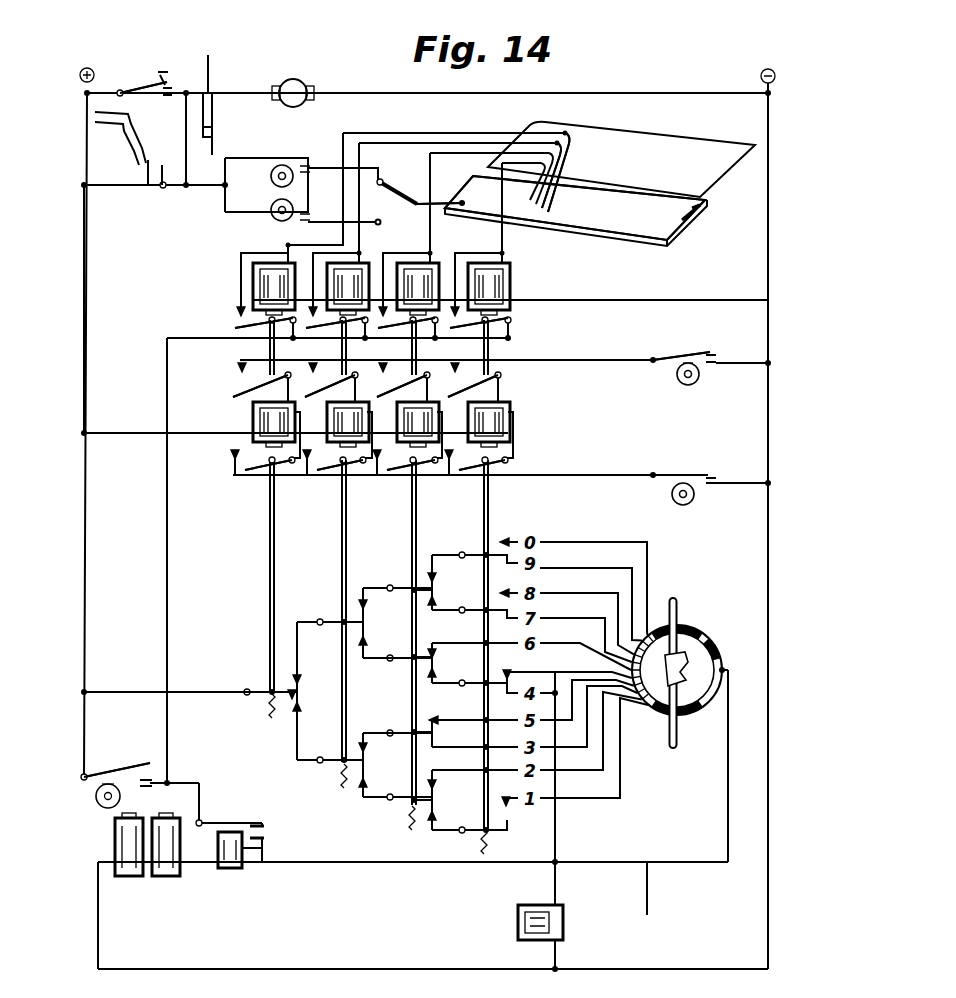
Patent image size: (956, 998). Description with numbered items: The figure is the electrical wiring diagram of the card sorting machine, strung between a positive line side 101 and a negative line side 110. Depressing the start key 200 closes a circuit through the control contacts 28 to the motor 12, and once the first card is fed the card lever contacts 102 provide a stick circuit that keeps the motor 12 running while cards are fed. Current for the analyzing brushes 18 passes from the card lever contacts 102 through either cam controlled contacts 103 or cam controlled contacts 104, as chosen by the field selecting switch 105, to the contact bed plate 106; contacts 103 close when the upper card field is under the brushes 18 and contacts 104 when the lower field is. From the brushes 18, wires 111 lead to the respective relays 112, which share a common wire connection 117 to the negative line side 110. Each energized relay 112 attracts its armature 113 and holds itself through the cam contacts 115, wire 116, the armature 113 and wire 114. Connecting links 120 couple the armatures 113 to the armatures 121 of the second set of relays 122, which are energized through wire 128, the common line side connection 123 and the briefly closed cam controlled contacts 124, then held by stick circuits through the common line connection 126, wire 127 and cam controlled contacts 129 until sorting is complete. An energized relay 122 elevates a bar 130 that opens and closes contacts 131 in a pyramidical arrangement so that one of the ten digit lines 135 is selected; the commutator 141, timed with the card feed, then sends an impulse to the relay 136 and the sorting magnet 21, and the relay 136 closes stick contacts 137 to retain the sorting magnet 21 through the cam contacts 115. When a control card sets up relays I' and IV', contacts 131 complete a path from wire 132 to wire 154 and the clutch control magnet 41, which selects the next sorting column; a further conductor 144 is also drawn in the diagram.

The start key 200 is at (170, 85).
The control contacts 28 is at (208, 93).
The motor 12 is at (293, 80).
The card lever contacts 102 is at (152, 192).
The cam controlled contacts 103 is at (306, 158).
The cam controlled contacts 104 is at (318, 198).
The switch 105 is at (400, 197).
The wires 111 is at (430, 228).
The analyzing brushes 18 is at (558, 175).
The contact bed plate 106 is at (693, 207).
The negative line side 110 is at (768, 233).
The common wire connection 117 is at (692, 300).
The relays 112 is at (502, 297).
The wire 114 is at (240, 275).
The armature 113 is at (248, 322).
The positive line side 101 is at (85, 345).
The connecting links 120 is at (440, 360).
The armatures 121 is at (285, 377).
The relays 122 is at (430, 398).
The common line side connection 123 is at (650, 371).
The cam controlled contacts 124 is at (735, 335).
The wire 127 is at (535, 475).
The cam controlled contacts 129 is at (712, 478).
The wire 128 is at (133, 434).
The wire 116 is at (167, 518).
The common line connection 126 is at (350, 483).
The bar 130 is at (322, 596).
The wire 132 is at (187, 692).
The contacts 131 is at (390, 733).
The digit lines 135 is at (570, 616).
The commutator 141 is at (662, 740).
The cam contacts 115 is at (150, 772).
The sorting magnet 21 is at (160, 840).
The stick contacts 137 is at (265, 828).
The relay 136 is at (263, 850).
The clutch control magnet 41 is at (520, 921).
The wire 154 is at (555, 831).
The conductor 144 is at (640, 906).